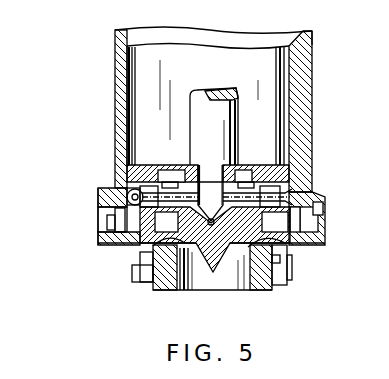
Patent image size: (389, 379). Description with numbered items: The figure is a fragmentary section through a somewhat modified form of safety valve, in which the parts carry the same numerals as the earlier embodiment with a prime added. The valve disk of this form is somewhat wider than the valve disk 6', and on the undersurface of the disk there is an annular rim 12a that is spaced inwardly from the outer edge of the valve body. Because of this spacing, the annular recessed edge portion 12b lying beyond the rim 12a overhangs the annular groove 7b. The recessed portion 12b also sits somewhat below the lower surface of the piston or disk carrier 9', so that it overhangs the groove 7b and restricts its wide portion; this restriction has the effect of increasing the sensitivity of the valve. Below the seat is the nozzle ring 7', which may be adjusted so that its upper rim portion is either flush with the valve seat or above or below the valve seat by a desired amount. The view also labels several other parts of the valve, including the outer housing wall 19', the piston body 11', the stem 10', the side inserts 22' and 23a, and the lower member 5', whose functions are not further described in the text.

The housing wall 19' is at (320, 111).
The piston or disk carrier 9' is at (210, 106).
The piston 11' is at (214, 126).
The valve needle stem 10' is at (195, 183).
The left flange insert 22' is at (94, 216).
The right flange insert 23a is at (305, 220).
The annular rim 12a is at (168, 218).
The annular recessed edge portion 12b is at (178, 222).
The annular groove 7b is at (212, 269).
The valve disk 6' is at (281, 264).
The nozzle ring 7' is at (296, 265).
The nut base 5' is at (202, 275).